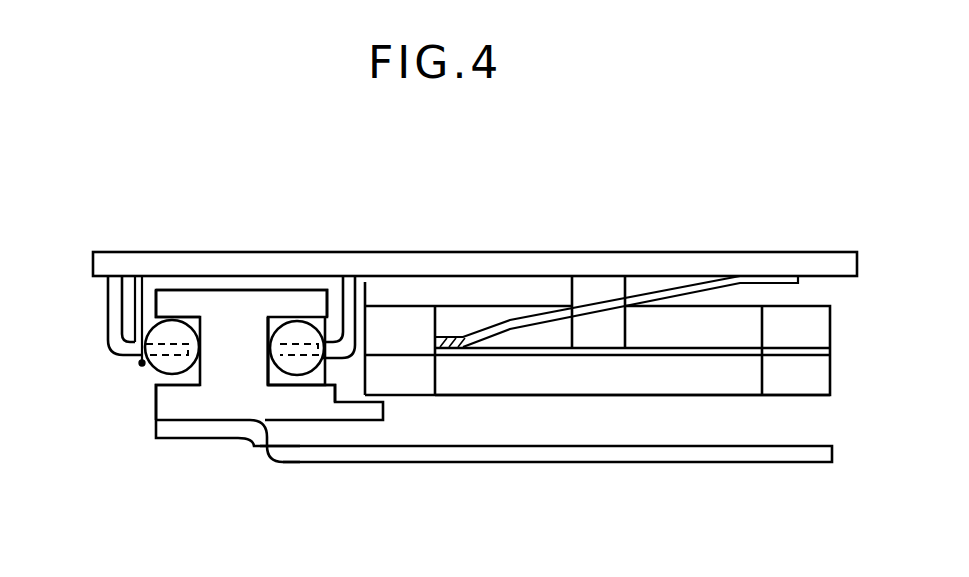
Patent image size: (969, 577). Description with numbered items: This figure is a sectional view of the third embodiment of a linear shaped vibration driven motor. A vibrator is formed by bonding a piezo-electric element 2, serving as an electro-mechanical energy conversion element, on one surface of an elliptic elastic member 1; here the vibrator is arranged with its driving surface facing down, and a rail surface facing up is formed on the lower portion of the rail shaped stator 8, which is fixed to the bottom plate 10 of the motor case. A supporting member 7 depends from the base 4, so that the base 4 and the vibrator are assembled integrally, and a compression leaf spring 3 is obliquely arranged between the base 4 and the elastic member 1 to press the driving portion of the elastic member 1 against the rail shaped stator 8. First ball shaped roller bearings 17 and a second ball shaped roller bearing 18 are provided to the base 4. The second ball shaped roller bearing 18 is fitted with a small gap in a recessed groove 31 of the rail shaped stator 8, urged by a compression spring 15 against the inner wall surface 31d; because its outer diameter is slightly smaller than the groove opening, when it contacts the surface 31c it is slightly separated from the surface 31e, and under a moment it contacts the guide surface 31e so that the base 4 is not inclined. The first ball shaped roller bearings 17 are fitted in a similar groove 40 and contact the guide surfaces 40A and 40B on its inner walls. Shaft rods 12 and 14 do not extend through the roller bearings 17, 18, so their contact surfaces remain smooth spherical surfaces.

The elastic member 1 is at (823, 373).
The piezo-electric element 2 is at (827, 303).
The compression leaf spring 3 is at (695, 277).
The base 4 is at (665, 265).
The supporting member 7 is at (593, 288).
The rail shaped stator 8 is at (210, 305).
The bottom plate 10 is at (803, 455).
The shaft rod 12 is at (358, 292).
The shaft rod 14 is at (107, 300).
The compression spring 15 is at (143, 282).
The first ball shaped roller bearings 17 is at (298, 318).
The second ball shaped roller bearing 18 is at (140, 363).
The recessed groove 31 is at (138, 375).
The guide surface 31c is at (162, 315).
The inner wall surface 31d is at (200, 373).
The guide surface 31e is at (152, 386).
The groove 40 is at (322, 385).
The guide surface 40A is at (316, 312).
The guide surface 40B is at (268, 380).